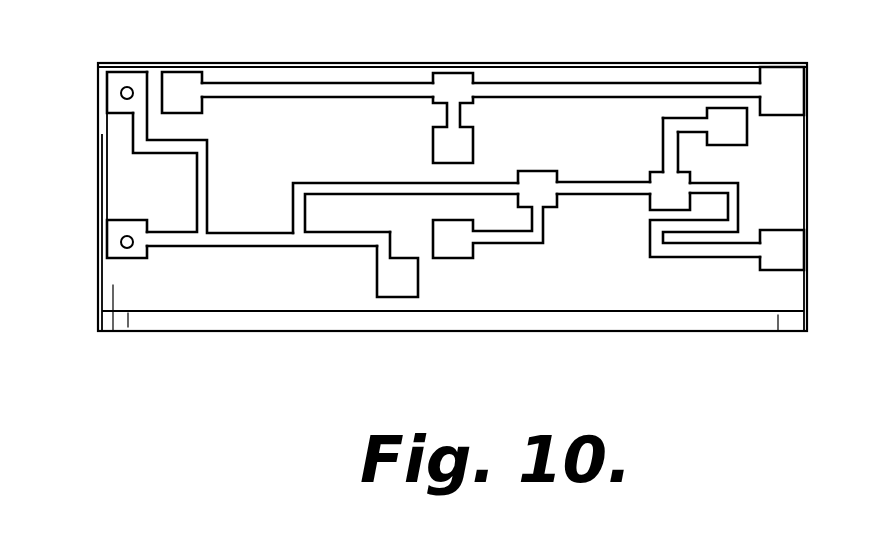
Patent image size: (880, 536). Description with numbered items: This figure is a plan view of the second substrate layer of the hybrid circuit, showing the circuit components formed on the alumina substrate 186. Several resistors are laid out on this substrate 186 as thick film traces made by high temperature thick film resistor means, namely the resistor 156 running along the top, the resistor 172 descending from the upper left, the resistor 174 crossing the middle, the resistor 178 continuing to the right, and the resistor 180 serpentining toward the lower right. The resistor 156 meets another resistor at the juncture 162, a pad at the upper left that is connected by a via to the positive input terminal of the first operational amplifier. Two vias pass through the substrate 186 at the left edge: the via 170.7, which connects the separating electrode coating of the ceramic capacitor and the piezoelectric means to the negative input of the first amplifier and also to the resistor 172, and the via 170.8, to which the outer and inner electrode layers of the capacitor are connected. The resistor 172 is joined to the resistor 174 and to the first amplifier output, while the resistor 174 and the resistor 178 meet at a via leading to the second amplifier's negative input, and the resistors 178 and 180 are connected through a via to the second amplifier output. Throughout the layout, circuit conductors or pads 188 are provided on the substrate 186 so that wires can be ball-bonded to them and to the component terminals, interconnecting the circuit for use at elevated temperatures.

The resistor 156 is at (323, 83).
The juncture 162 is at (192, 68).
The via 170.7 is at (121, 93).
The via 170.8 is at (121, 242).
The resistor 172 is at (196, 194).
The resistor 174 is at (388, 162).
The resistor 178 is at (603, 194).
The resistor 180 is at (663, 250).
The alumina substrate 186 is at (682, 65).
The circuit conductors or pads 188 is at (140, 72).